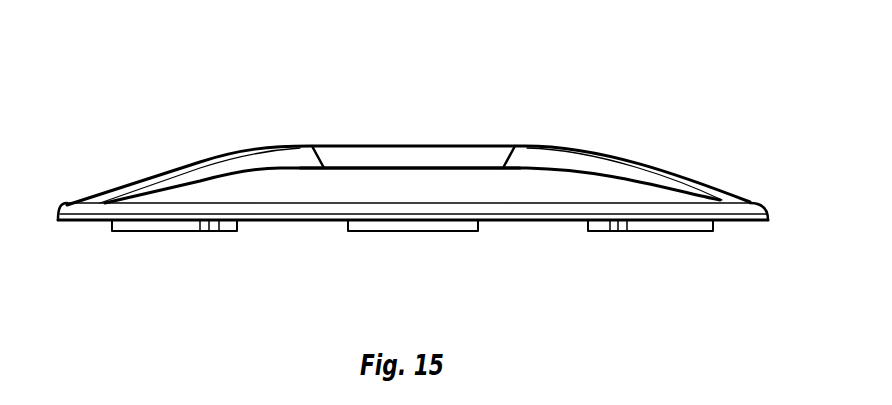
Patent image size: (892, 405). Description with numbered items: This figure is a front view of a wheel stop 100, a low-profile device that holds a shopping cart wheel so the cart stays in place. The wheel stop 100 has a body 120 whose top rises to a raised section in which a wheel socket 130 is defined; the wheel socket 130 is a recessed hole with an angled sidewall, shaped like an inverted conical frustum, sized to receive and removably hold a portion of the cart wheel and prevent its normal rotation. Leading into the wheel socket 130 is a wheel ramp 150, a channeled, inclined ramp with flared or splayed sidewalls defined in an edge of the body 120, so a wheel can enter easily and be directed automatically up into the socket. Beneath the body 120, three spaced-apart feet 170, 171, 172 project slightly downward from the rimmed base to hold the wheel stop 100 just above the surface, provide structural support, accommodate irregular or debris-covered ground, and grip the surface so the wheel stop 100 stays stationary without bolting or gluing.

The wheel stop 100 is at (668, 120).
The body 120 is at (190, 168).
The wheel socket 130 is at (420, 155).
The wheel ramp 150 is at (347, 172).
The foot 170 is at (173, 231).
The foot 171 is at (410, 231).
The foot 172 is at (667, 232).